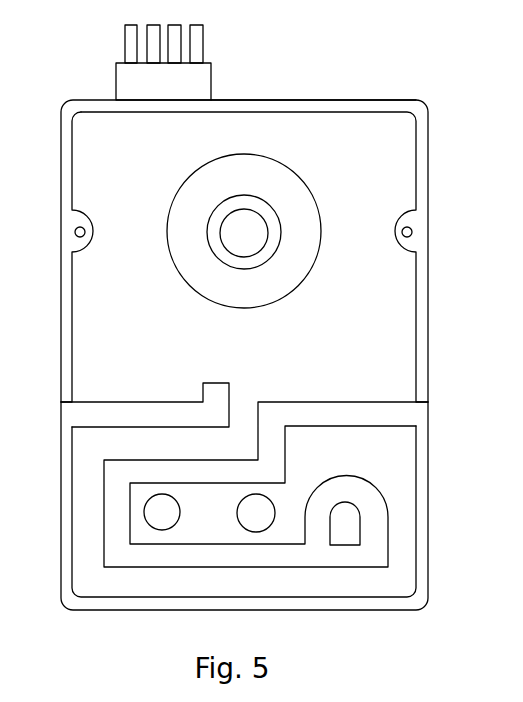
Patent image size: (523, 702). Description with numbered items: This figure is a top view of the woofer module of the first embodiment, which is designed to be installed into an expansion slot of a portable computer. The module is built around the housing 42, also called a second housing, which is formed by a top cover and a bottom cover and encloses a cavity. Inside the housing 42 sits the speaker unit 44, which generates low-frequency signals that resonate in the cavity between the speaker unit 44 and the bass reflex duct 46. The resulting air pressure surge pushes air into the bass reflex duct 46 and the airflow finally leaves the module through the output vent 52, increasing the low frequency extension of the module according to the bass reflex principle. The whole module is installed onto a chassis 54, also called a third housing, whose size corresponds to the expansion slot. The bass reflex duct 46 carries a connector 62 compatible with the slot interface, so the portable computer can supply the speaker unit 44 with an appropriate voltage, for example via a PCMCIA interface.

The housing 42 is at (428, 318).
The speaker unit 44 is at (283, 190).
The bass reflex duct 46 is at (122, 415).
The output vent 52 is at (160, 512).
The chassis 54 is at (245, 100).
The connector 62 is at (115, 88).